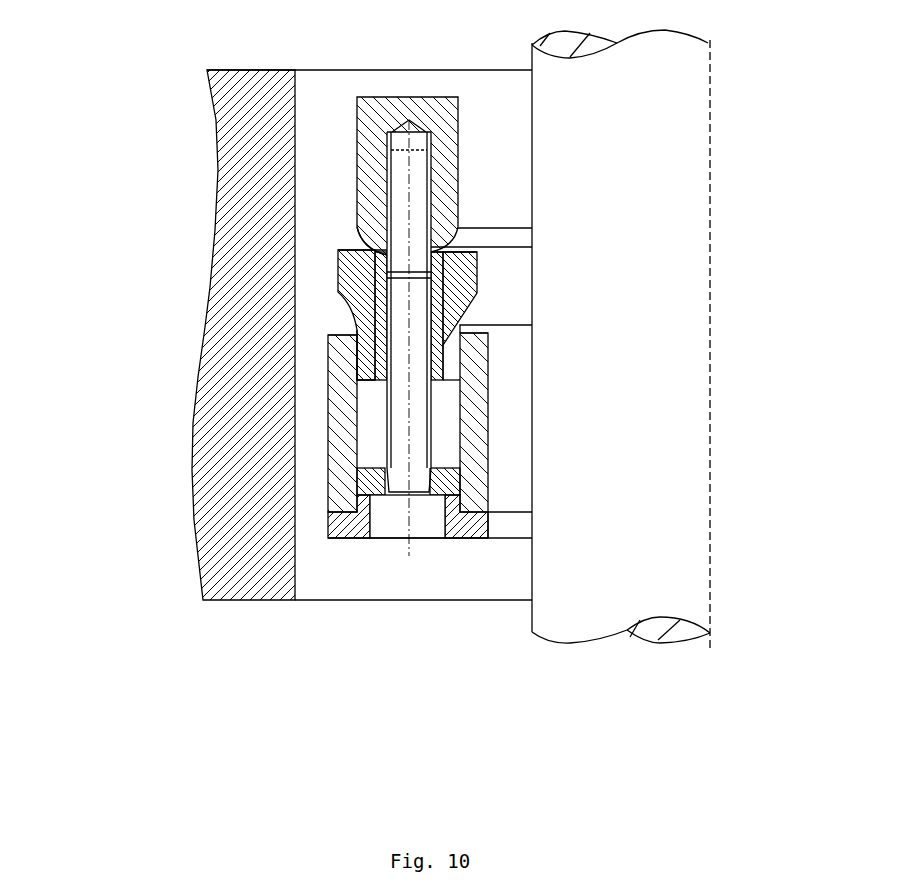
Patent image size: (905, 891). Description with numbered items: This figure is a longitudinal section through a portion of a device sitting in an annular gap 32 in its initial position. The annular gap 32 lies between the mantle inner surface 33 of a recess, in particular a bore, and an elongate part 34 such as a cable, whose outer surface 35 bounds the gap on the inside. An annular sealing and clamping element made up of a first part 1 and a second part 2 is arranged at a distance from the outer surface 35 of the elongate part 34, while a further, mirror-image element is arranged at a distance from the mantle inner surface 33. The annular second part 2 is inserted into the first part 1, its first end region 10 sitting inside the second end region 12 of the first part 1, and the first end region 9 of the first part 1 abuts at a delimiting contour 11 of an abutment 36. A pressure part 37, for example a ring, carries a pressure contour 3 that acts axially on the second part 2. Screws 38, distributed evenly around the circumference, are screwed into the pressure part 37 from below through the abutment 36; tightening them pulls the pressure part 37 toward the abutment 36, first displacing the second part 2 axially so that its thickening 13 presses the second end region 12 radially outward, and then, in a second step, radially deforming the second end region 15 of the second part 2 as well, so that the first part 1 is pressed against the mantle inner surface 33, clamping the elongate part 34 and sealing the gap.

The first part 1 is at (343, 442).
The second part 2 is at (368, 312).
The pressure contour 3 is at (358, 233).
The first end region 9 is at (323, 484).
The first end region 10 is at (362, 357).
The delimiting contour 11 is at (345, 503).
The second end region 12 is at (315, 369).
The thickening 13 is at (338, 292).
The second end region 15 is at (338, 263).
The annular gap 32 is at (325, 115).
The mantle inner surface 33 is at (290, 125).
The elongate part 34 is at (585, 77).
The outer surface 35 is at (522, 76).
The abutment 36 is at (370, 497).
The pressure part 37 is at (448, 140).
The screw 38 is at (413, 410).